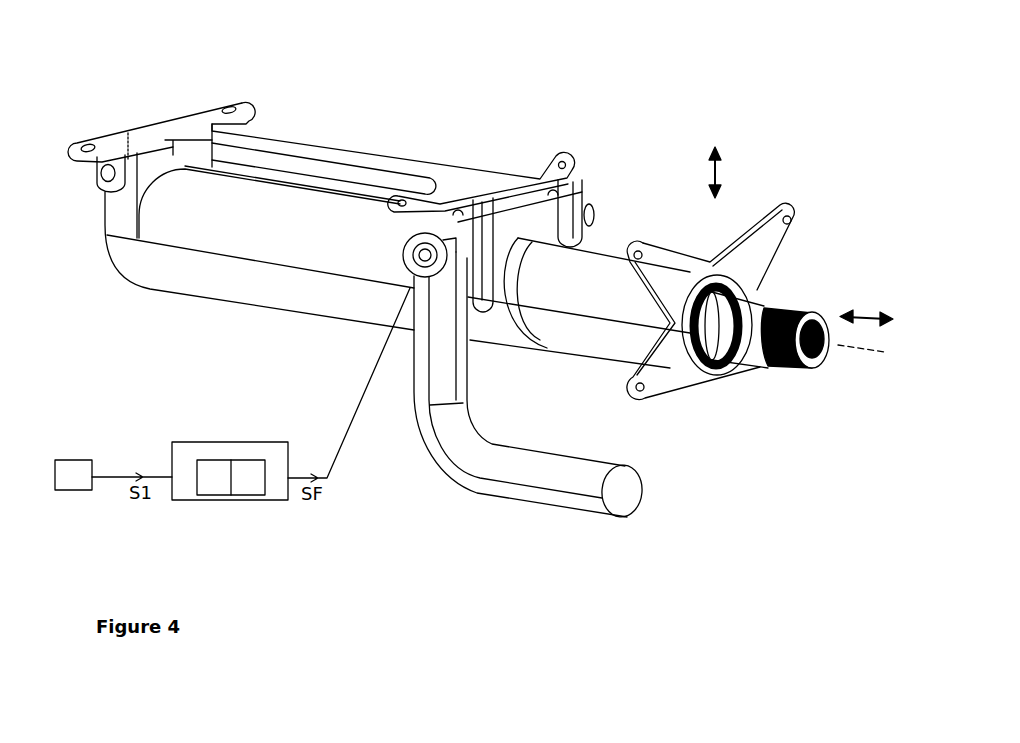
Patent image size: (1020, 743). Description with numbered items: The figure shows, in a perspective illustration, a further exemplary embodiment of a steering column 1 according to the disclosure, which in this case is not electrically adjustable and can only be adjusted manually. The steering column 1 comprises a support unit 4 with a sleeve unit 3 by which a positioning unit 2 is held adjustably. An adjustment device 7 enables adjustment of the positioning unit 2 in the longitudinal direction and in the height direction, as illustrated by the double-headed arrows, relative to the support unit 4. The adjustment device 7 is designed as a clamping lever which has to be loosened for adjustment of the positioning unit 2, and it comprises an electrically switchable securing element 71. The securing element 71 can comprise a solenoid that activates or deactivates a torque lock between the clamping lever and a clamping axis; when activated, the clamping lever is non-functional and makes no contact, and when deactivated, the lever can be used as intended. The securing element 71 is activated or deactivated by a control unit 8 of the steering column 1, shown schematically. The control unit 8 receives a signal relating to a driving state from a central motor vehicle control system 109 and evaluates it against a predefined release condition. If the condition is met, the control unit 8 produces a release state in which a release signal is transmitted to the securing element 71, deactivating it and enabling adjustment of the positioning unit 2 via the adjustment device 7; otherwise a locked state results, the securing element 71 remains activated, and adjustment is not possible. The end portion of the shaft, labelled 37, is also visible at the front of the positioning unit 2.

The steering column 1 is at (573, 71).
The positioning unit 2 is at (608, 248).
The sleeve unit 3 is at (274, 318).
The support unit 4 is at (340, 157).
The adjustment device 7 is at (567, 473).
The control unit 8 is at (270, 503).
The steering shaft end portion 37 is at (750, 310).
The electrically switchable securing element 71 is at (430, 252).
The central motor vehicle control system 109 is at (82, 492).